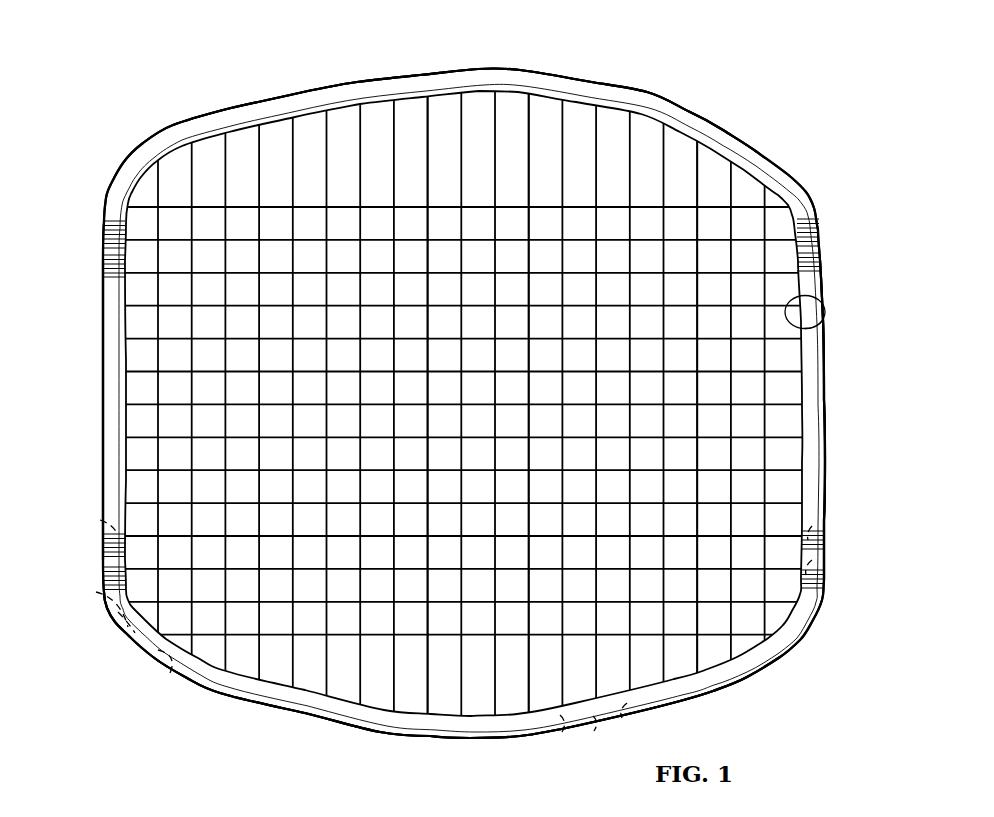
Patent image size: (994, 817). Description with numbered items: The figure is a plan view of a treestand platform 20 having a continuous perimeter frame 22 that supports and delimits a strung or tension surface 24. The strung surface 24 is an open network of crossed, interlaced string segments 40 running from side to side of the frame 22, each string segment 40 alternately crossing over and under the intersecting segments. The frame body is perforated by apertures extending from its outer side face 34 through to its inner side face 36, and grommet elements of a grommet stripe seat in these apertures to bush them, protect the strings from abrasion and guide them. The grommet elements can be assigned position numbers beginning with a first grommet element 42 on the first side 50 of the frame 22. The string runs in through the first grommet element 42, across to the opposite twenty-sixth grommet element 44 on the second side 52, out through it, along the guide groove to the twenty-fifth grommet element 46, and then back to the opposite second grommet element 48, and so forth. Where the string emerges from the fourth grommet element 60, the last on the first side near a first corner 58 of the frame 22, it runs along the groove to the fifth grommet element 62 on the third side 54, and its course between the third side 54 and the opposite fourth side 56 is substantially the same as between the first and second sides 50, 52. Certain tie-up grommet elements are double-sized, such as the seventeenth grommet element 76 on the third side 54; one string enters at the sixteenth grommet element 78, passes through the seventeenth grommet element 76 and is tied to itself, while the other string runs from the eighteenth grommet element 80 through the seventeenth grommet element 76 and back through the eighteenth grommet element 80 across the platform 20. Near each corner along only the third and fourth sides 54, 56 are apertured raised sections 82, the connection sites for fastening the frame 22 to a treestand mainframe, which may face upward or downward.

The treestand platform 20 is at (226, 92).
The perimeter frame 22 is at (220, 106).
The strung surface 24 is at (272, 222).
The outer side face 34 is at (826, 300).
The inner side face 36 is at (822, 325).
The string segment 40 is at (427, 127).
The first grommet element 42 is at (100, 520).
The twenty-sixth grommet element 44 is at (815, 528).
The twenty-fifth grommet element 46 is at (812, 560).
The second grommet element 48 is at (104, 578).
The first side 50 is at (105, 437).
The second side 52 is at (817, 462).
The third side 54 is at (474, 723).
The fourth side 56 is at (443, 77).
The first corner 58 is at (128, 624).
The fourth grommet element 60 is at (118, 614).
The fifth grommet element 62 is at (168, 670).
The seventeenth grommet element 76 is at (593, 717).
The sixteenth grommet element 78 is at (560, 715).
The eighteenth grommet element 80 is at (627, 703).
The apertured raised section 82 is at (822, 241).